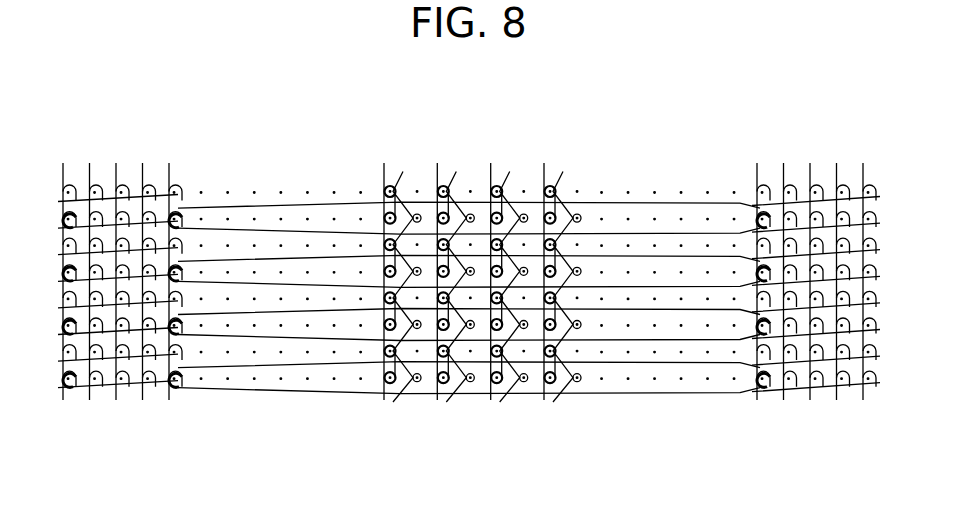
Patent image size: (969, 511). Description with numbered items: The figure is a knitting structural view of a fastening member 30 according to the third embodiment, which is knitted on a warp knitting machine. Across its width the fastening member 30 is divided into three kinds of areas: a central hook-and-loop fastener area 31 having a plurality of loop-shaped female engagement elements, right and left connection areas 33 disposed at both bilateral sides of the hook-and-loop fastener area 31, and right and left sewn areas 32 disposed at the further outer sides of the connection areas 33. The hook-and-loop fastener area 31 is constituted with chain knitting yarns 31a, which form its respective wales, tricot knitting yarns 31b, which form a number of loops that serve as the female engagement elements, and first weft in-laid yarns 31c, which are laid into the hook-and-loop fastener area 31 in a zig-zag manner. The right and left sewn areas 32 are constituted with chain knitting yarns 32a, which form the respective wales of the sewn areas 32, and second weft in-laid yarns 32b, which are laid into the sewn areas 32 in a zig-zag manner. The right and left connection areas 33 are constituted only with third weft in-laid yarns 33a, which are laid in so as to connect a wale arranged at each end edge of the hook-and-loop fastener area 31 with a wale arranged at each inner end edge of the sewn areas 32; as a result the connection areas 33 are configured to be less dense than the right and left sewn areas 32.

The fastening member 30 is at (141, 106).
The hook-and-loop fastener area 31 is at (380, 417).
The chain knitting yarns 31a is at (380, 183).
The tricot knitting yarns 31b is at (410, 195).
The first weft in-laid yarns 31c is at (482, 195).
The sewn areas 32 is at (882, 417).
The chain knitting yarns 32a is at (173, 175).
The second weft in-laid yarns 32b is at (111, 195).
The connection areas 33 is at (771, 417).
The third weft in-laid yarns 33a is at (298, 202).